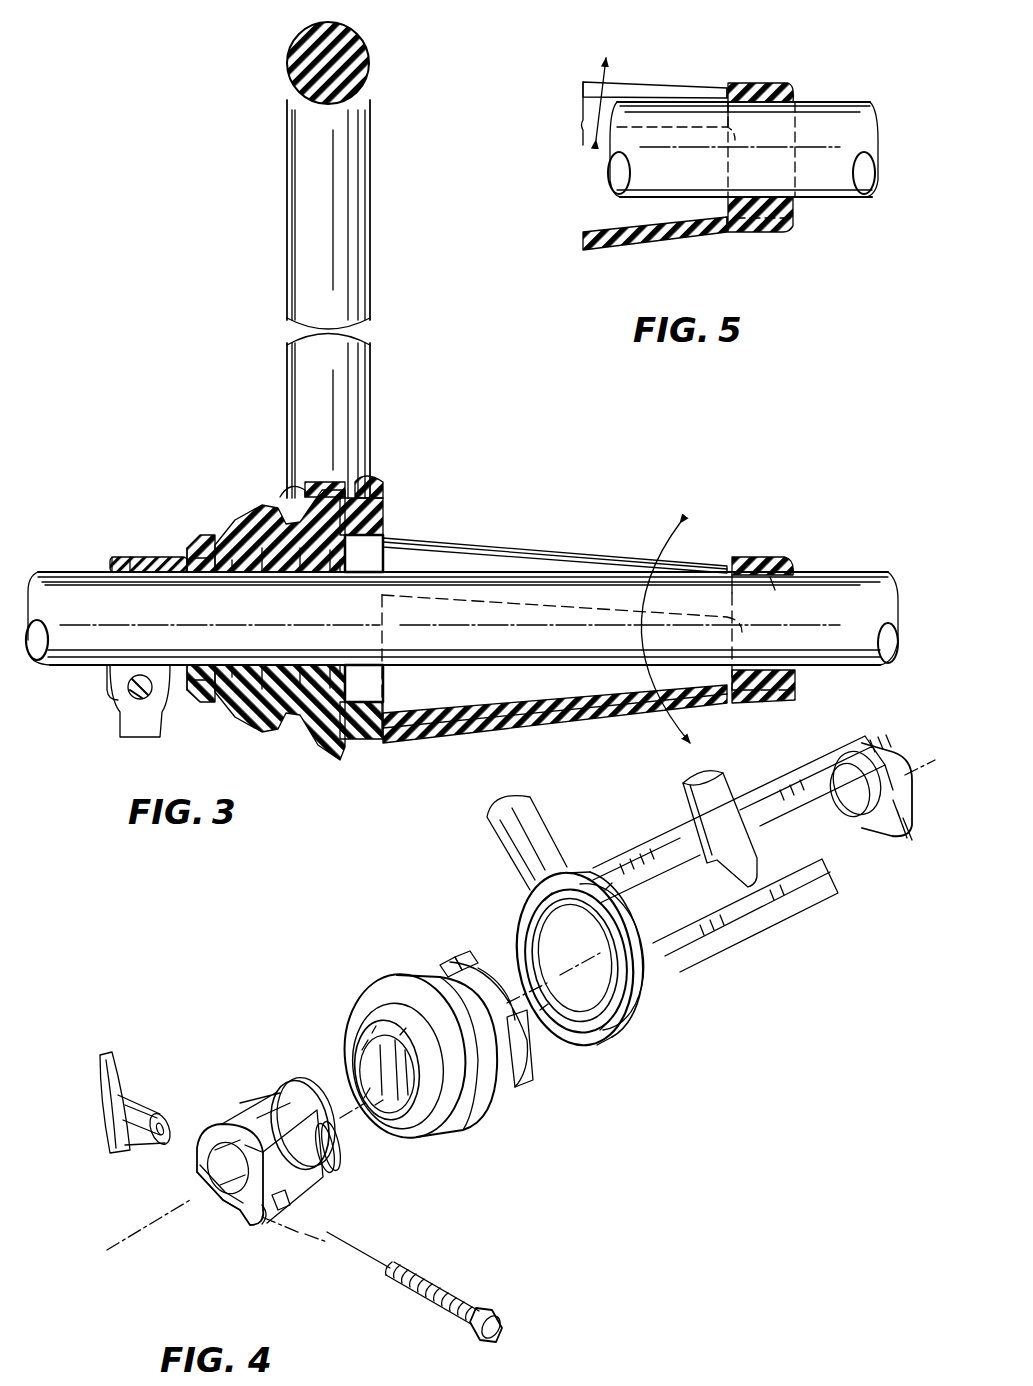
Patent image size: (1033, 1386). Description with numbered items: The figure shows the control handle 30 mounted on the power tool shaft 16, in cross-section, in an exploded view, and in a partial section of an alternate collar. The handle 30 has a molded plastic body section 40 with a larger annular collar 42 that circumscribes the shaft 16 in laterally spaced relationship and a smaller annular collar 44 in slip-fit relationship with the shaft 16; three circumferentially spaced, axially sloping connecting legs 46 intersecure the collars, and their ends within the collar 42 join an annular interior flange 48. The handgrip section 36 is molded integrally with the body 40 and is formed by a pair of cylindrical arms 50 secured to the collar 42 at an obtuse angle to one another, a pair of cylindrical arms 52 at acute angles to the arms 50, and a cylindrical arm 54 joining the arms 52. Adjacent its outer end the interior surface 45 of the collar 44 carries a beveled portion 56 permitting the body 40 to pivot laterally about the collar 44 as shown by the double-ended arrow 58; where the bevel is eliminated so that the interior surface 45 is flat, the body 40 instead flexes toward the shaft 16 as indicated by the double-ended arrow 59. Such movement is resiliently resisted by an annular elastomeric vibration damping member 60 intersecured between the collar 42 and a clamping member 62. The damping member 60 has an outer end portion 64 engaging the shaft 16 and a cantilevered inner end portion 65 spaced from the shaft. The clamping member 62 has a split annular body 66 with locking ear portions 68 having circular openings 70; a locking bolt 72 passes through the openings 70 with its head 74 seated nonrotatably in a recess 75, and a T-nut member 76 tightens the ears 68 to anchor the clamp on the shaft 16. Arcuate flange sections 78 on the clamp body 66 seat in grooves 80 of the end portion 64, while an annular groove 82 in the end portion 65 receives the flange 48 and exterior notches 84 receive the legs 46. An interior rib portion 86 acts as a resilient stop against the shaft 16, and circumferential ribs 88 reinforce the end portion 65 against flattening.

In FIG. 3, the shaft 16 is at (55, 572).
In FIG. 5, the shaft 16 is at (840, 102).
In FIG. 3, the handle 30 is at (432, 500).
In FIG. 4, the handle 30 is at (365, 918).
In FIG. 3, the handgrip section 36 is at (285, 360).
In FIG. 4, the handgrip section 36 is at (488, 845).
In FIG. 3, the handle body section 40 is at (520, 730).
In FIG. 5, the handle body section 40 is at (715, 80).
In FIG. 4, the handle body section 40 is at (668, 825).
In FIG. 3, the annular collar 42 is at (382, 488).
In FIG. 4, the annular collar 42 is at (585, 875).
In FIG. 3, the annular collar 44 is at (770, 557).
In FIG. 5, the annular collar 44 is at (770, 83).
In FIG. 4, the annular collar 44 is at (882, 760).
In FIG. 3, the interior surface 45 is at (750, 577).
In FIG. 5, the interior surface 45 is at (758, 105).
In FIG. 3, the connecting legs 46 is at (508, 545).
In FIG. 5, the connecting legs 46 is at (635, 82).
In FIG. 4, the connecting legs 46 is at (780, 780).
In FIG. 3, the interior flange 48 is at (364, 618).
In FIG. 4, the interior flange 48 is at (565, 1020).
In FIG. 3, the cylindrical arms 50 is at (370, 440).
In FIG. 3, the cylindrical arms 52 is at (370, 205).
In FIG. 3, the cylindrical arm 54 is at (366, 42).
In FIG. 3, the beveled portion 56 is at (785, 578).
In FIG. 3, the double-ended arrow 58 is at (665, 525).
In FIG. 5, the double-ended arrow 59 is at (590, 75).
In FIG. 3, the vibration damping member 60 is at (248, 490).
In FIG. 4, the vibration damping member 60 is at (375, 975).
In FIG. 3, the clamping member 62 is at (108, 552).
In FIG. 4, the clamping member 62 is at (205, 1120).
In FIG. 3, the outer end portion 64 is at (200, 510).
In FIG. 4, the outer end portion 64 is at (348, 1005).
In FIG. 3, the cantilevered inner end portion 65 is at (283, 495).
In FIG. 4, the cantilevered inner end portion 65 is at (487, 965).
In FIG. 3, the split annular body 66 is at (140, 557).
In FIG. 4, the split annular body 66 is at (238, 1115).
In FIG. 3, the locking ear portions 68 is at (105, 688).
In FIG. 4, the locking ear portions 68 is at (205, 1200).
In FIG. 4, the circular openings 70 is at (248, 1165).
In FIG. 3, the locking bolt 72 is at (130, 690).
In FIG. 4, the locking bolt 72 is at (435, 1280).
In FIG. 4, the head 74 is at (498, 1318).
In FIG. 4, the recess 75 is at (292, 1195).
In FIG. 3, the T-nut member 76 is at (118, 730).
In FIG. 4, the T-nut member 76 is at (98, 1100).
In FIG. 3, the arcuate flange sections 78 is at (212, 535).
In FIG. 4, the arcuate flange sections 78 is at (272, 1085).
In FIG. 3, the grooves 80 is at (190, 540).
In FIG. 4, the grooves 80 is at (360, 1060).
In FIG. 3, the annular groove 82 is at (325, 482).
In FIG. 4, the annular groove 82 is at (462, 958).
In FIG. 4, the exterior notches 84 is at (442, 963).
In FIG. 3, the interior rib portion 86 is at (335, 648).
In FIG. 3, the circumferential ribs 88 is at (262, 640).